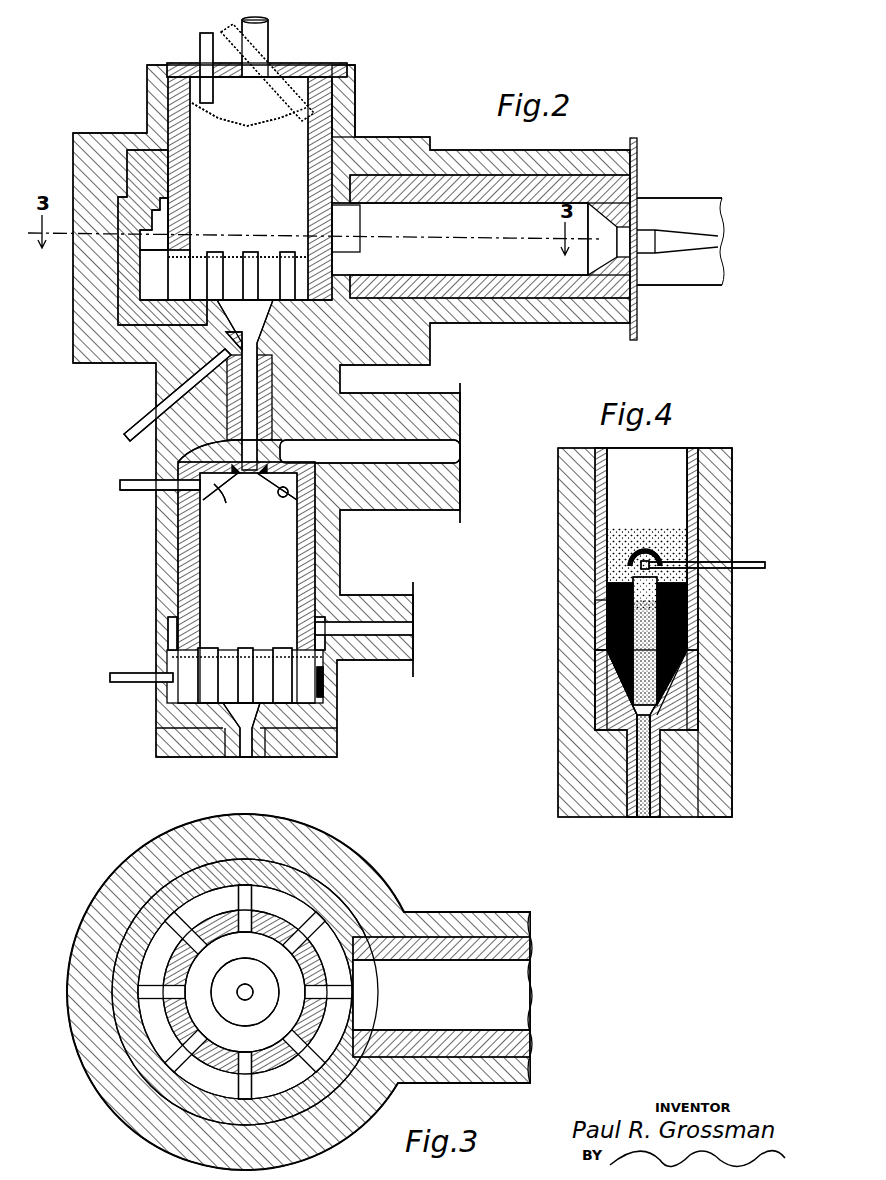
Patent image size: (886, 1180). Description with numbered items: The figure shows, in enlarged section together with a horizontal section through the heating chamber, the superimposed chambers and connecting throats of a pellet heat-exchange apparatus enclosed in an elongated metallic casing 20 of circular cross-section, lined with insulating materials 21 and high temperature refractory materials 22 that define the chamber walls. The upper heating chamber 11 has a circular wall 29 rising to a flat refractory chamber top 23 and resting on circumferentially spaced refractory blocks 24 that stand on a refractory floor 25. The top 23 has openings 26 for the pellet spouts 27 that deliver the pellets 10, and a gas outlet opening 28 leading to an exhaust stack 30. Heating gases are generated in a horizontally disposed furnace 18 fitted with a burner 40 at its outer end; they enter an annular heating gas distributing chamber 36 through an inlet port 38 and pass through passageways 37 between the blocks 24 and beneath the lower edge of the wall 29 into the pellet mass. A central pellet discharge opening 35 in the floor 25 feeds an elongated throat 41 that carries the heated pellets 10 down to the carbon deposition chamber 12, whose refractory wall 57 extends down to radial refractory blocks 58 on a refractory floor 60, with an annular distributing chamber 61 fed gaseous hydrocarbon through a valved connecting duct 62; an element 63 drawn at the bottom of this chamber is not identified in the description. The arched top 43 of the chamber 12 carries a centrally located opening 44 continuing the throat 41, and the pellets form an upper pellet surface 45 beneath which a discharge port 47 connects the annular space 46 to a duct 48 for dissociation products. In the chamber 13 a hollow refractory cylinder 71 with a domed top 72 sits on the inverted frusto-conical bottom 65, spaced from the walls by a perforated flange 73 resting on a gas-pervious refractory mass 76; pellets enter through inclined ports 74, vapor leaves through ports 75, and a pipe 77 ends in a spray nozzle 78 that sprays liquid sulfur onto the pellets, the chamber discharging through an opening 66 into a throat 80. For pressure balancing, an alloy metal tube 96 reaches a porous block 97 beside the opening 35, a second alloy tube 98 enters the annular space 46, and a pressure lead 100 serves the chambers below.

In FIG. 4, the pellets 10 is at (672, 545).
In FIG. 2, the upper heating chamber 11 is at (249, 188).
In FIG. 2, the carbon deposition chamber 12 is at (248, 588).
In FIG. 4, the chamber 13 is at (647, 549).
In FIG. 2, the combustion chamber or furnace 18 is at (460, 239).
In FIG. 3, the combustion chamber or furnace 18 is at (441, 995).
In FIG. 2, the elongated metallic casing 20 is at (358, 98).
In FIG. 4, the elongated metallic casing 20 is at (733, 470).
In FIG. 3, the elongated metallic casing 20 is at (375, 872).
In FIG. 2, the insulating materials 21 is at (350, 117).
In FIG. 4, the insulating materials 21 is at (712, 788).
In FIG. 3, the insulating materials 21 is at (95, 955).
In FIG. 2, the high temperature refractory materials 22 is at (138, 150).
In FIG. 3, the high temperature refractory materials 22 is at (137, 920).
In FIG. 2, the chamber top 23 is at (320, 66).
In FIG. 2, the refractory blocks 24 is at (196, 262).
In FIG. 3, the refractory blocks 24 is at (178, 925).
In FIG. 2, the refractory floor 25 is at (155, 298).
In FIG. 2, the openings 26 is at (202, 72).
In FIG. 2, the pellet spouts 27 is at (226, 30).
In FIG. 2, the gas outlet opening 28 is at (250, 80).
In FIG. 2, the circular wall 29 is at (178, 152).
In FIG. 3, the circular wall 29 is at (190, 970).
In FIG. 2, the exhaust stack 30 is at (268, 34).
In FIG. 2, the pellet discharge opening 35 is at (250, 350).
In FIG. 3, the pellet discharge opening 35 is at (245, 995).
In FIG. 2, the annular heating gas distributing chamber 36 is at (250, 225).
In FIG. 2, the passageways 37 is at (268, 262).
In FIG. 3, the passageways 37 is at (248, 992).
In FIG. 2, the inlet port 38 is at (347, 244).
In FIG. 3, the inlet port 38 is at (360, 975).
In FIG. 2, the burner 40 is at (665, 235).
In FIG. 2, the elongated throat 41 is at (240, 440).
In FIG. 2, the top 43 is at (150, 484).
In FIG. 2, the centrally located opening 44 is at (250, 490).
In FIG. 2, the upper pellet surface 45 is at (281, 498).
In FIG. 2, the annular space 46 is at (226, 504).
In FIG. 2, the discharge port 47 is at (290, 465).
In FIG. 2, the duct 48 is at (445, 393).
In FIG. 2, the refractory wall 57 is at (192, 597).
In FIG. 2, the refractory blocks 58 is at (190, 670).
In FIG. 2, the refractory floor 60 is at (300, 705).
In FIG. 2, the annular distributing chamber 61 is at (170, 630).
In FIG. 2, the valved connecting duct 62 is at (375, 662).
In FIG. 2, the outlet nozzle 63 is at (246, 748).
In FIG. 4, the inverted frusto-conical bottom 65 is at (615, 690).
In FIG. 4, the opening 66 is at (655, 735).
In FIG. 4, the hollow refractory cylinder 71 is at (600, 560).
In FIG. 4, the domed top 72 is at (626, 548).
In FIG. 4, the perforated flange 73 is at (596, 605).
In FIG. 4, the inclined ports 74 is at (645, 640).
In FIG. 4, the ports 75 is at (625, 690).
In FIG. 4, the gas-pervious refractory mass 76 is at (690, 655).
In FIG. 4, the pipe 77 is at (742, 562).
In FIG. 4, the spray nozzle or atomizing head 78 is at (646, 545).
In FIG. 4, the throat 80 is at (640, 818).
In FIG. 2, the alloy metal tube 96 is at (134, 428).
In FIG. 2, the porous block 97 is at (240, 332).
In FIG. 2, the second alloy tube 98 is at (136, 491).
In FIG. 2, the pressure lead 100 is at (122, 682).